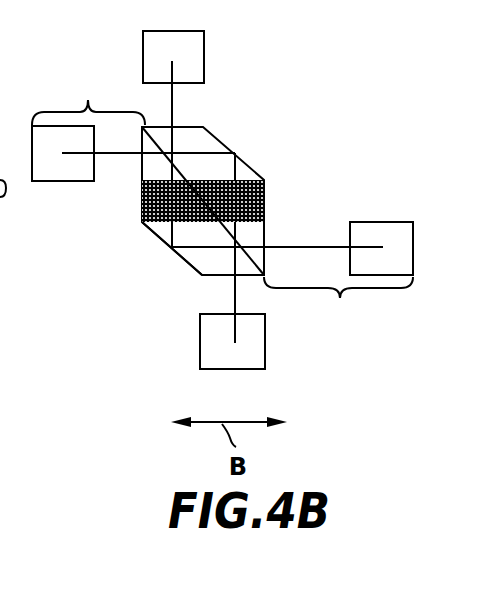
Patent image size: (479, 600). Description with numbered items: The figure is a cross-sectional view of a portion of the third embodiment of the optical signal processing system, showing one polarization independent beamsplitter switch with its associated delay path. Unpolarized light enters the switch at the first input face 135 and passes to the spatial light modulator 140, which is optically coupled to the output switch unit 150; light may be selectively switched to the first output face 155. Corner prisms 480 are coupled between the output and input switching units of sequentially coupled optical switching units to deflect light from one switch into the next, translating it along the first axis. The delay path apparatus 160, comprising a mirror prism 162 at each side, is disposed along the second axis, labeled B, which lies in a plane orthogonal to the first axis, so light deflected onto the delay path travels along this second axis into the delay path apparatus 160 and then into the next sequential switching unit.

The first input face 135 is at (201, 128).
The spatial light modulator 140 is at (264, 197).
The first output face 155 is at (258, 254).
The output switch unit 150 is at (202, 254).
The corner prism 480 is at (204, 56).
The mirror prism 162 is at (40, 182).
The delay path apparatus 160 is at (222, 202).